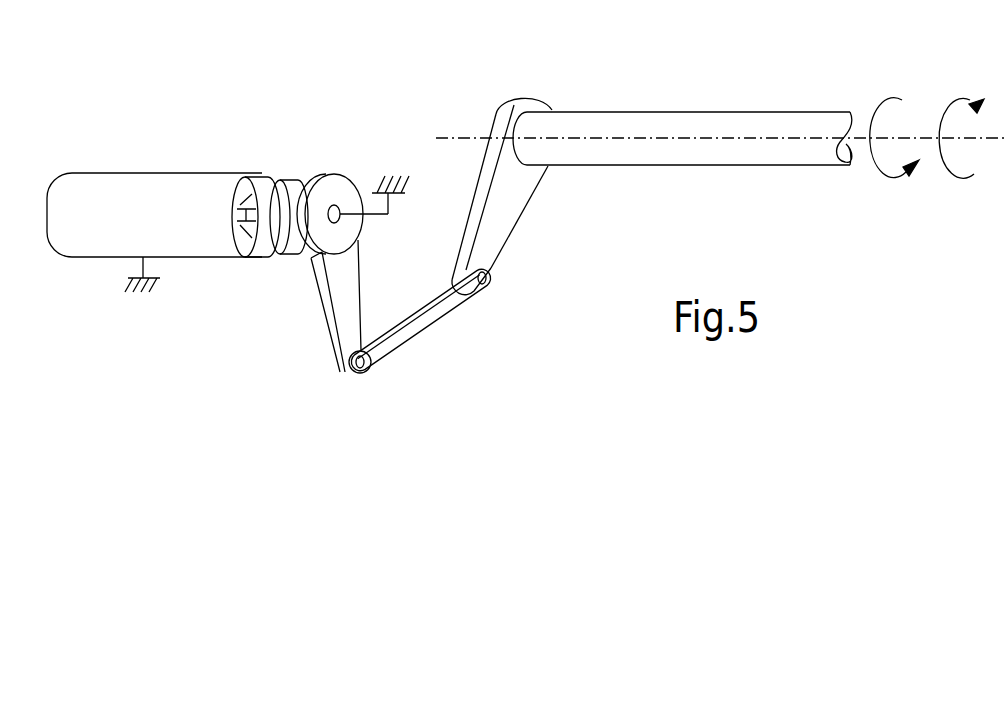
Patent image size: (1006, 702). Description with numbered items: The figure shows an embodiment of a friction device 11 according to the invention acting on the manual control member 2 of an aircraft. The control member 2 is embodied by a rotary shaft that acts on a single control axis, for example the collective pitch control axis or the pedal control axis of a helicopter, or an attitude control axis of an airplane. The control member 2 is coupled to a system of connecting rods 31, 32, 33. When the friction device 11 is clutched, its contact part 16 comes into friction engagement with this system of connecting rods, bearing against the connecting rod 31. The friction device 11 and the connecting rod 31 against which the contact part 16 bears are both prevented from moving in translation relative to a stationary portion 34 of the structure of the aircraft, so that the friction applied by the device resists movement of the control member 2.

The manual control member 2 is at (669, 102).
The friction device 11 is at (89, 270).
The contact part 16 is at (283, 166).
The connecting rod 31 is at (328, 342).
The connecting rod 32 is at (432, 325).
The connecting rod 33 is at (532, 198).
The stationary portion 34 is at (152, 278).